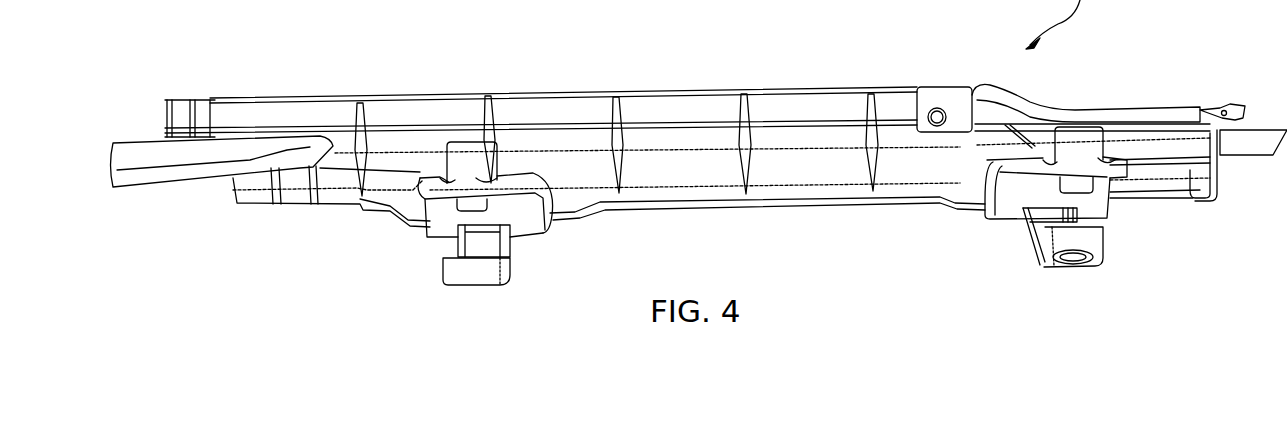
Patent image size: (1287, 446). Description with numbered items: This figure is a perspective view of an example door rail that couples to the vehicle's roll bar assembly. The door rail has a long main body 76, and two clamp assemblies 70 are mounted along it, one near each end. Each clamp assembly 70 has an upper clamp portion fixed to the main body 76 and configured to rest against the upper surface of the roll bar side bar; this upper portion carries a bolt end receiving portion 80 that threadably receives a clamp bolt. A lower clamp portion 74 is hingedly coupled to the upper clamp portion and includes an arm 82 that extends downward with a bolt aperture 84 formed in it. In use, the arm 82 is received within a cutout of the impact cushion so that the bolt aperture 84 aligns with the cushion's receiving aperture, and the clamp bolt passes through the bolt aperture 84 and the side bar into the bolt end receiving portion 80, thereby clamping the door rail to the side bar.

The clamp assembly 70 is at (439, 274).
The lower clamp portion 74 is at (510, 247).
The main body 76 is at (695, 122).
The bolt end receiving portion 80 is at (470, 147).
The arm 82 is at (800, 284).
The bolt aperture 84 is at (1070, 263).